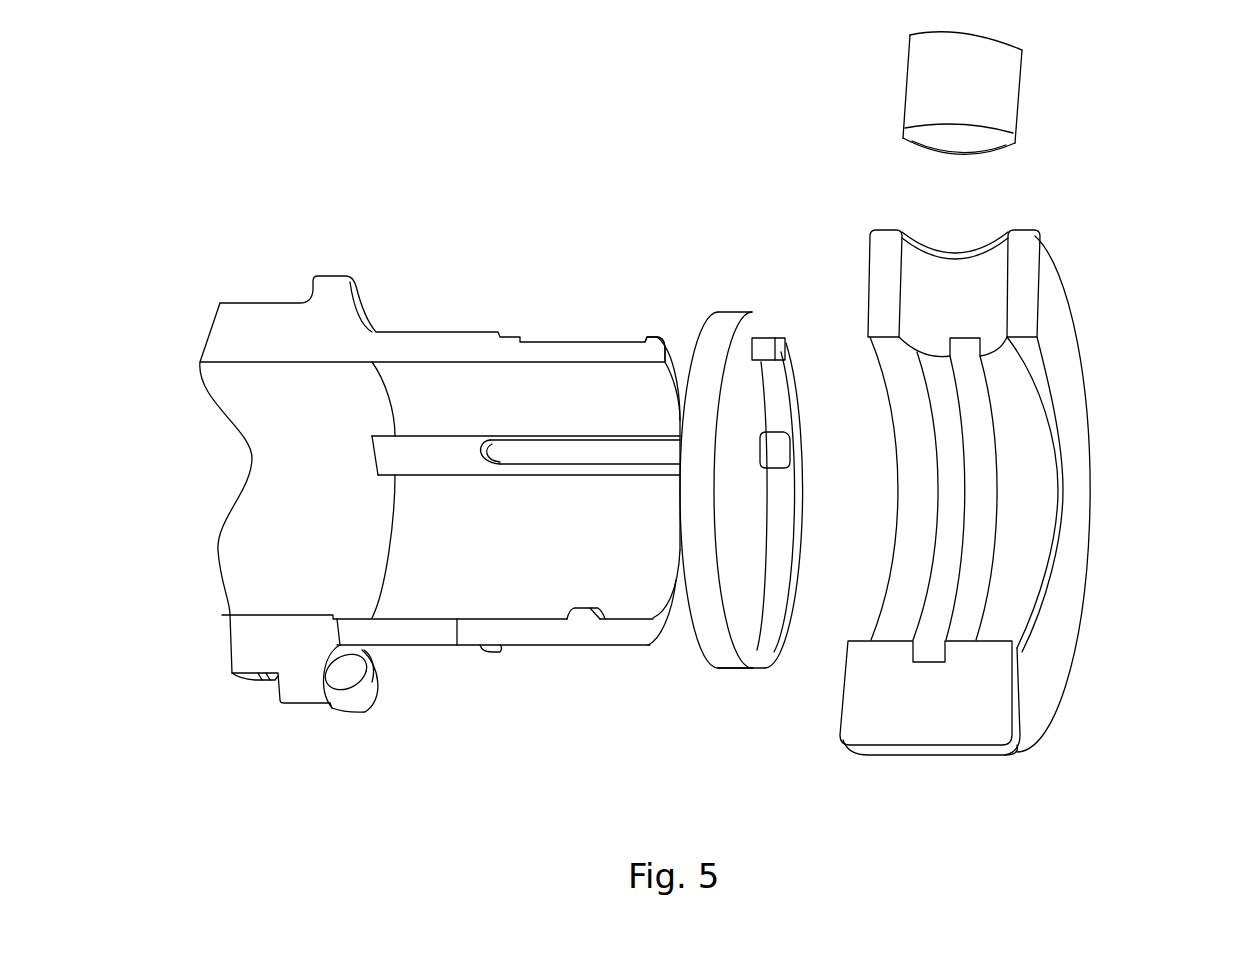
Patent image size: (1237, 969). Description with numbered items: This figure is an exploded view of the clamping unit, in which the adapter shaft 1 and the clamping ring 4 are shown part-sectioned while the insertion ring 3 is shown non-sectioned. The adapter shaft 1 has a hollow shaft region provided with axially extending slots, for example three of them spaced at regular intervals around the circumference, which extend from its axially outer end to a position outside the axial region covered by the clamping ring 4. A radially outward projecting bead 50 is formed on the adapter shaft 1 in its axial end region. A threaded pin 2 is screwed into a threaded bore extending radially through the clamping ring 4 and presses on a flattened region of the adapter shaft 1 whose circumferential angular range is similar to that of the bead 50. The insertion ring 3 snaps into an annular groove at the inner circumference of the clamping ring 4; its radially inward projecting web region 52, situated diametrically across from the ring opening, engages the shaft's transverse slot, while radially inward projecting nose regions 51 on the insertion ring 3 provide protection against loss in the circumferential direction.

The adapter shaft 1 is at (275, 342).
The threaded pin 2 is at (972, 90).
The insertion ring 3 is at (911, 562).
The clamping ring 4 is at (1055, 318).
The bead 50 is at (651, 332).
The nose region 51 is at (786, 455).
The web region 52 is at (740, 634).